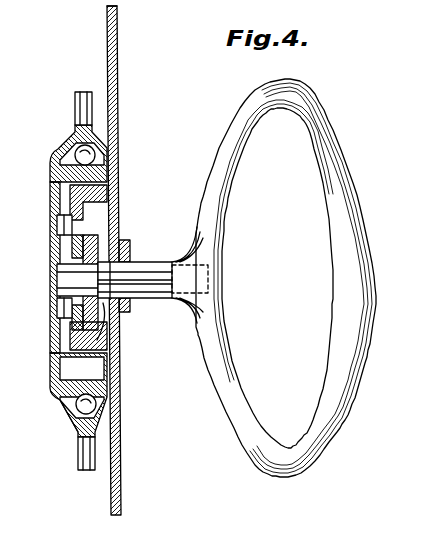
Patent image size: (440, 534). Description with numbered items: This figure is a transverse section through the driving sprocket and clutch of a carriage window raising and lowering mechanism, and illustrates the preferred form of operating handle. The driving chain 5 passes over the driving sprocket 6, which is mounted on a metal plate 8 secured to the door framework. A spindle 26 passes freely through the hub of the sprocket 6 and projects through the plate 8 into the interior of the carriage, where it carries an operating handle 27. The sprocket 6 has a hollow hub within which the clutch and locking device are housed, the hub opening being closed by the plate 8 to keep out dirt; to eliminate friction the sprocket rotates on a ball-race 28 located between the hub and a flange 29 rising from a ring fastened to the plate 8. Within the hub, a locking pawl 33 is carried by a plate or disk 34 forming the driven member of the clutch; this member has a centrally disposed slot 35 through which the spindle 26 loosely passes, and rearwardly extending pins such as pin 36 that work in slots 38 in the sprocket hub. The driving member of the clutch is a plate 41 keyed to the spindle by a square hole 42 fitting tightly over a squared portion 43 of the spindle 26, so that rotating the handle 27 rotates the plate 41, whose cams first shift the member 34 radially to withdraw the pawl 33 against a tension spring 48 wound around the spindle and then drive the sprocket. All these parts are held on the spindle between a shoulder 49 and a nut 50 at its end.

The driving chain 5 is at (106, 12).
The metal plate 8 is at (115, 108).
The ball-race 28 is at (75, 138).
The flange 29 is at (65, 170).
The driving sprocket 6 is at (66, 406).
The locking pawl 33 is at (95, 188).
The rearwardly extending pin 36 is at (57, 220).
The slots 38 is at (62, 238).
The driven clutch member 34 is at (67, 247).
The slot 35 is at (67, 259).
The nut 50 is at (57, 302).
The square hole 42 is at (111, 240).
The shoulder 49 is at (88, 275).
The squared portion 43 is at (113, 287).
The spindle 26 is at (154, 298).
The driving clutch plate 41 is at (97, 343).
The tension spring 48 is at (120, 332).
The operating handle 27 is at (352, 414).